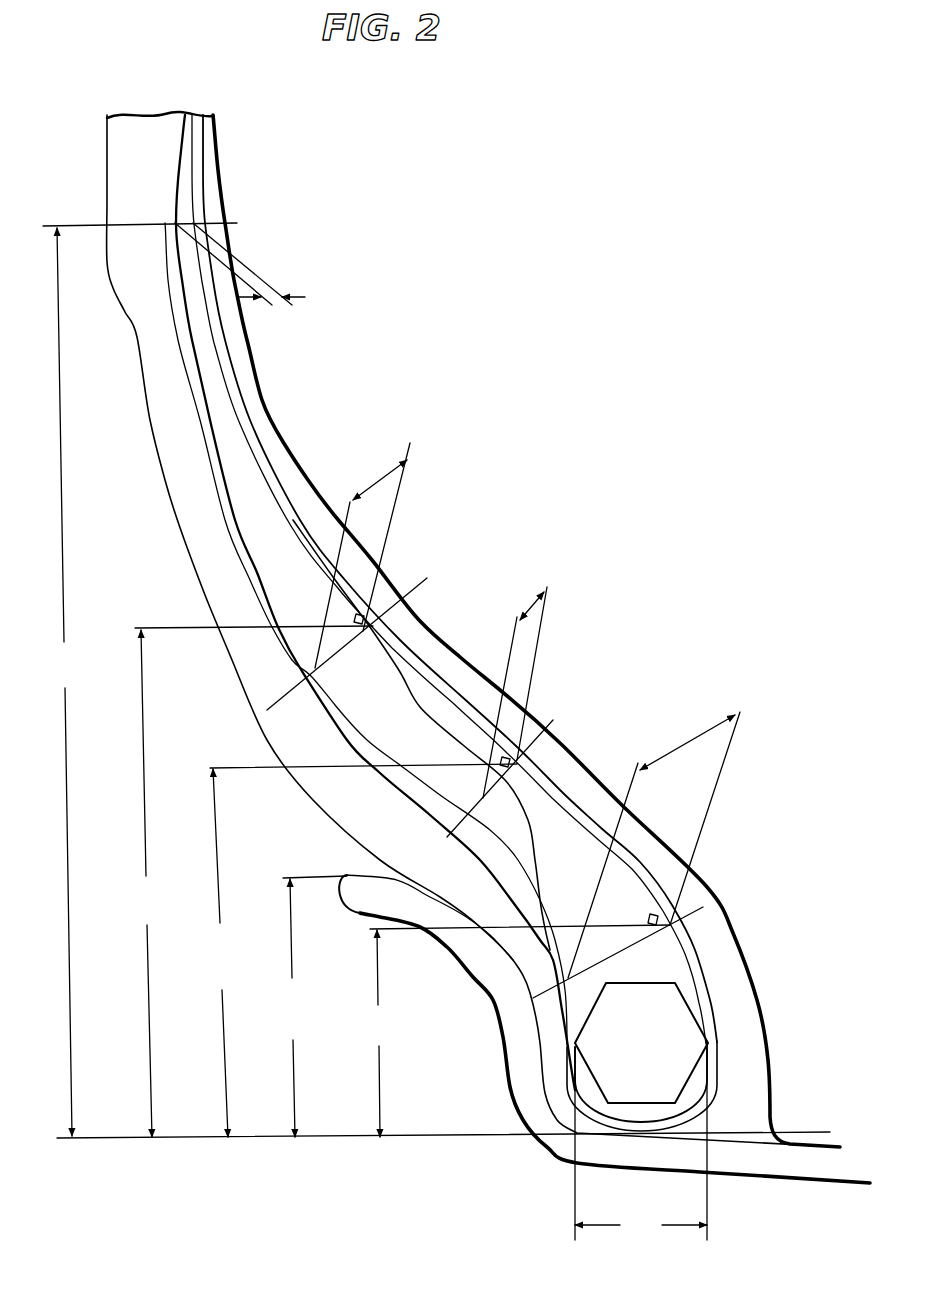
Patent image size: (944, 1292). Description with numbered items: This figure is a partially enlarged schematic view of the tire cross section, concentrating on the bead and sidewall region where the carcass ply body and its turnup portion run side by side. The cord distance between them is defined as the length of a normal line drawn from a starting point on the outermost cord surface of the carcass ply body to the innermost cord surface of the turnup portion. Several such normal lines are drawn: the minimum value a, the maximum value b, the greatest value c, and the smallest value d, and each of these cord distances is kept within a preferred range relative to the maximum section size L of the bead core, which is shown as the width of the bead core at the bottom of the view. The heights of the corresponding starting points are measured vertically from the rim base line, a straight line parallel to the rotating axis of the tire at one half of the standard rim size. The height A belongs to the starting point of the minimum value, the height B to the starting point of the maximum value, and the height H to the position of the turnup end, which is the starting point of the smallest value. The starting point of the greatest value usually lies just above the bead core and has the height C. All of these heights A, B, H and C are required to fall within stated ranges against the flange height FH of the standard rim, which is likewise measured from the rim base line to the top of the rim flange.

The height of turnup end H is at (140, 679).
The height of starting point at maximum value B is at (254, 881).
The height of starting point at minimum value A is at (363, 950).
The flange height of standard rim FH is at (312, 1006).
The height of starting point at greatest value C is at (519, 1031).
The maximum section size of bead core L is at (641, 1142).
The minimum value of cord distance a is at (500, 712).
The maximum value of cord distance b is at (347, 576).
The greatest value of cord distance c is at (636, 855).
The smallest value of cord distance d is at (240, 264).